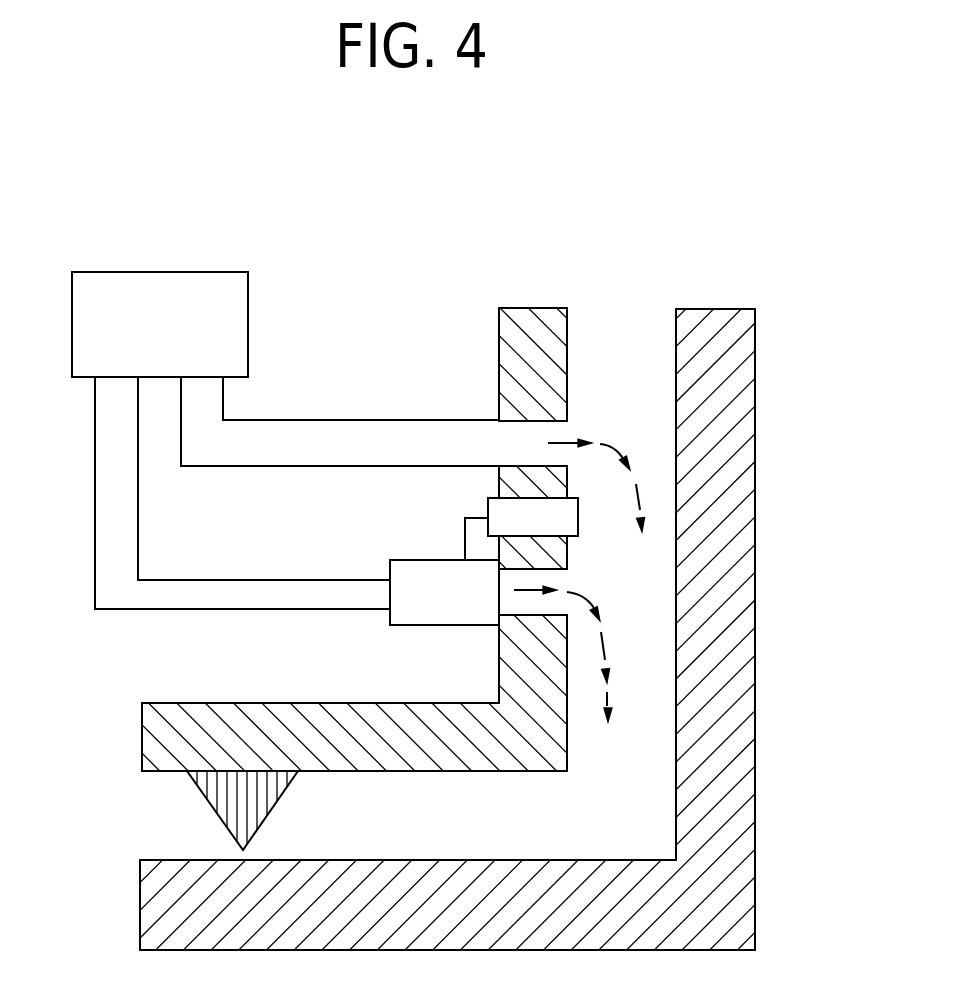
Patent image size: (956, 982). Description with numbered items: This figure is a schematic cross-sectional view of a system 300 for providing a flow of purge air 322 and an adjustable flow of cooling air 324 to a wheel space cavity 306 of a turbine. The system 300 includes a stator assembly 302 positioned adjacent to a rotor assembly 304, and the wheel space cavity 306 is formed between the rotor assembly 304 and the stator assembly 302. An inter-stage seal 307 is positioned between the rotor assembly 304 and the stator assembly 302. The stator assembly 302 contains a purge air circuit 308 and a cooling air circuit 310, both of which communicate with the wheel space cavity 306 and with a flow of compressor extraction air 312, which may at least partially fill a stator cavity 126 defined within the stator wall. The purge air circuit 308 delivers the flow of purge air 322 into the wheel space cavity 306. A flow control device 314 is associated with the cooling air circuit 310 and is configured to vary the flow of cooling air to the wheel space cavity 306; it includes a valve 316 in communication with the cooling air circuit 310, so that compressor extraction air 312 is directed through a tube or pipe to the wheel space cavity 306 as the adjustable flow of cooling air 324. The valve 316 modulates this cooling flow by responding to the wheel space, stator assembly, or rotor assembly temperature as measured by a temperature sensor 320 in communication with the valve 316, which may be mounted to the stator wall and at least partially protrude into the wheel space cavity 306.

The system 300 is at (566, 198).
The stator assembly 302 is at (499, 362).
The rotor assembly 304 is at (715, 309).
The wheel space cavity 306 is at (638, 565).
The inter-stage seal 307 is at (268, 793).
The purge air circuit 308 is at (325, 420).
The cooling air circuit 310 is at (263, 580).
The flow of compressor extraction air 312 is at (248, 300).
The flow control device 314 is at (415, 625).
The valve 316 is at (390, 560).
The temperature sensor 320 is at (488, 500).
The flow of purge air 322 is at (628, 455).
The adjustable flow of cooling air 324 is at (606, 652).
The stator cavity 126 is at (300, 508).